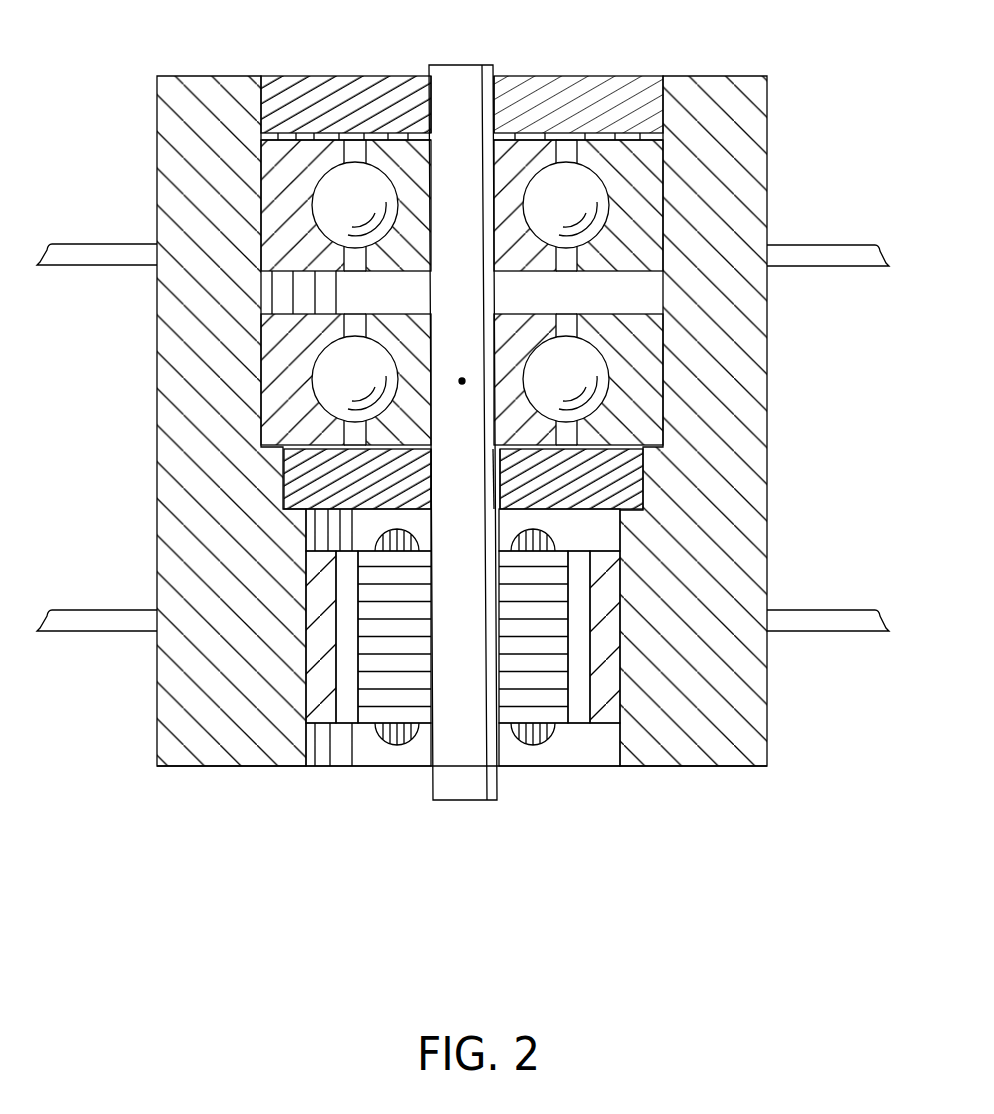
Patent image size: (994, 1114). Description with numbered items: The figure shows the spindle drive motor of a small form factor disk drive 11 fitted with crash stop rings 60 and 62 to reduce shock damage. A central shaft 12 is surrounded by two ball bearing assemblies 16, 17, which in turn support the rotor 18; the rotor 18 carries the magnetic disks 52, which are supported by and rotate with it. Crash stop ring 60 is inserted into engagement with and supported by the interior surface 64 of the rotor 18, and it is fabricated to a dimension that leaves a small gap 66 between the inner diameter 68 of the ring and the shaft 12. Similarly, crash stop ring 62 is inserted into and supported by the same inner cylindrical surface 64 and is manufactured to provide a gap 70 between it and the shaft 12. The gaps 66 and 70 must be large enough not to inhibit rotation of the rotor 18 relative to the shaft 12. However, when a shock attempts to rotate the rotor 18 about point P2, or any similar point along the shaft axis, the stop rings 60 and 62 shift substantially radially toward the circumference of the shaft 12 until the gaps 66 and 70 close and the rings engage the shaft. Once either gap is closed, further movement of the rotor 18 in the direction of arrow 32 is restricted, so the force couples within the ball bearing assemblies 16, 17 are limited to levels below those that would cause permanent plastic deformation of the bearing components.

The disk drive 11 is at (370, 848).
The shaft 12 is at (462, 65).
The ball bearing assembly 16 is at (563, 280).
The ball bearing assembly 17 is at (595, 308).
The rotor 18 is at (757, 208).
The arrow 32 is at (603, 900).
The disks 52 is at (106, 251).
The crash stop ring 60 is at (645, 470).
The crash stop ring 62 is at (592, 82).
The interior surface 64 is at (630, 493).
The gap 66 is at (503, 476).
The inner diameter 68 is at (491, 476).
The gap 70 is at (433, 72).
The point P2 is at (458, 367).